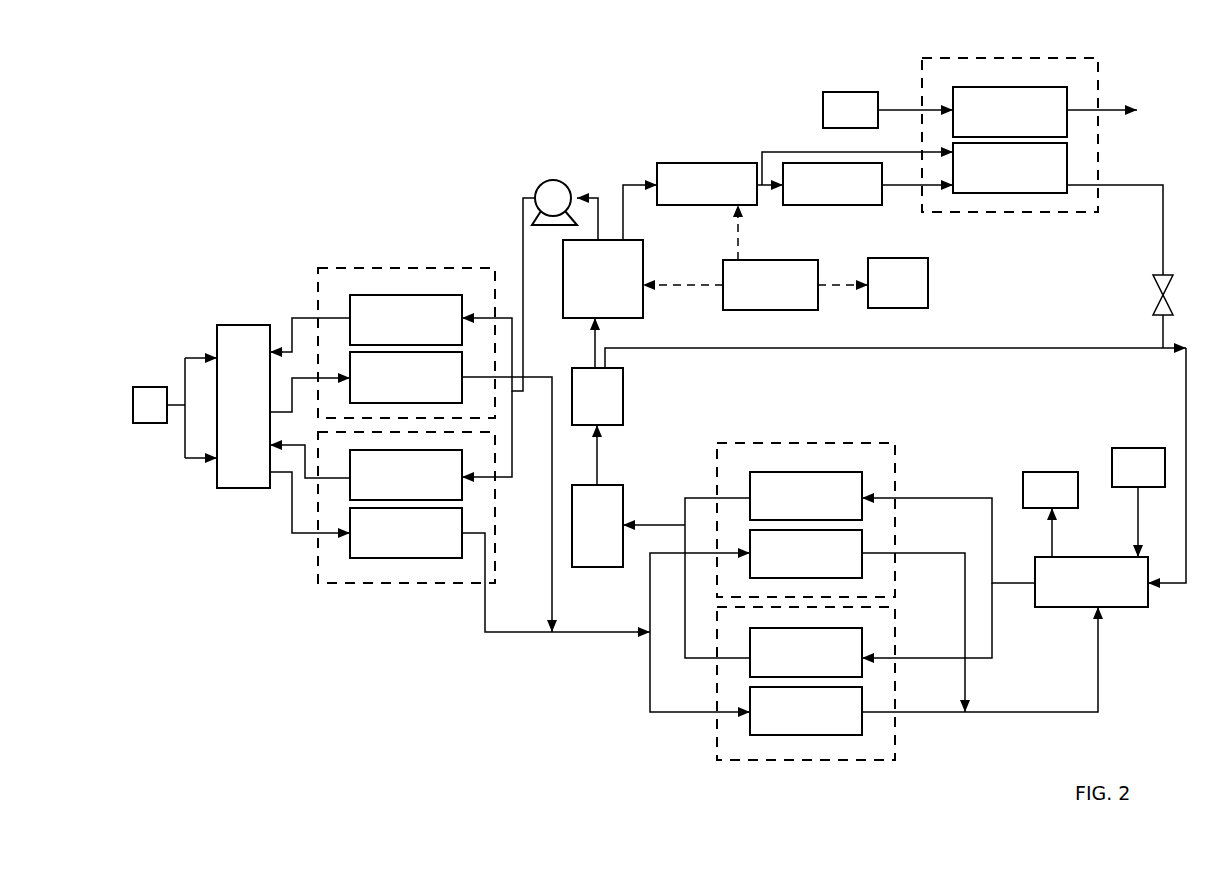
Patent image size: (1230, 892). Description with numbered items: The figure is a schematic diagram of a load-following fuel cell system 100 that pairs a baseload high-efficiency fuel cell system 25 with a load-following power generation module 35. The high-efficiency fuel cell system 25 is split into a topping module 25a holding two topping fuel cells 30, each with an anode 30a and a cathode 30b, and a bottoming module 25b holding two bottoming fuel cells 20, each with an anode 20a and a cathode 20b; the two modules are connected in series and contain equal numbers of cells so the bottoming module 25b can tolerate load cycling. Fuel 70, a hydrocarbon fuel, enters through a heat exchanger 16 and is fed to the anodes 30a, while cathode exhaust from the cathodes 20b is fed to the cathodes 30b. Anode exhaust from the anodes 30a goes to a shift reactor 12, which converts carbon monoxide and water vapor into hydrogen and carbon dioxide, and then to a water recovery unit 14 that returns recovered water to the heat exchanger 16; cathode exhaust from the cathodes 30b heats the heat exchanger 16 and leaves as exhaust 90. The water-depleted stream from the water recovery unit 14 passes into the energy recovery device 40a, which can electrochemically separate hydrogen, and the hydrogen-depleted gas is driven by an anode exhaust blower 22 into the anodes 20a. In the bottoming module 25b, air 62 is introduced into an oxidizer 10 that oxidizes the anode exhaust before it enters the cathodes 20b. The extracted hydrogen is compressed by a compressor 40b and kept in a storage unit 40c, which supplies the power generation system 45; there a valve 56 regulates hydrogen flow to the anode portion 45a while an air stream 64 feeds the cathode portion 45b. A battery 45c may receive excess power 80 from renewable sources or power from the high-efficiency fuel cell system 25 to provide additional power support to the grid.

The load-following fuel cell system 100 is at (283, 138).
The oxidizer 10 is at (243, 406).
The shift reactor 12 is at (597, 526).
The water recovery unit 14 is at (597, 396).
The heat exchanger 16 is at (1091, 582).
The bottoming fuel cells 20 is at (388, 268).
The anode of bottoming fuel cell 20a is at (406, 397).
The cathode of bottoming fuel cell 20b is at (406, 455).
The anode exhaust blower 22 is at (553, 180).
The high-efficiency fuel cell system 25 is at (430, 775).
The topping module 25a is at (702, 753).
The bottoming module 25b is at (338, 620).
The topping fuel cells 30 is at (818, 443).
The anode of topping fuel cell 30a is at (806, 574).
The cathode of topping fuel cell 30b is at (806, 632).
The load-following power generation module 35 is at (650, 138).
The energy recovery device 40a is at (603, 279).
The compressor 40b is at (707, 184).
The storage unit 40c is at (832, 184).
The power generation system 45 is at (928, 290).
The anode portion 45a is at (1010, 168).
The cathode portion 45b is at (1010, 112).
The battery 45c is at (898, 283).
The valve 56 is at (1153, 286).
The air 62 is at (150, 405).
The air stream 64 is at (850, 110).
The fuel 70 is at (1138, 467).
The excess power 80 is at (770, 285).
The exhaust 90 is at (1050, 490).